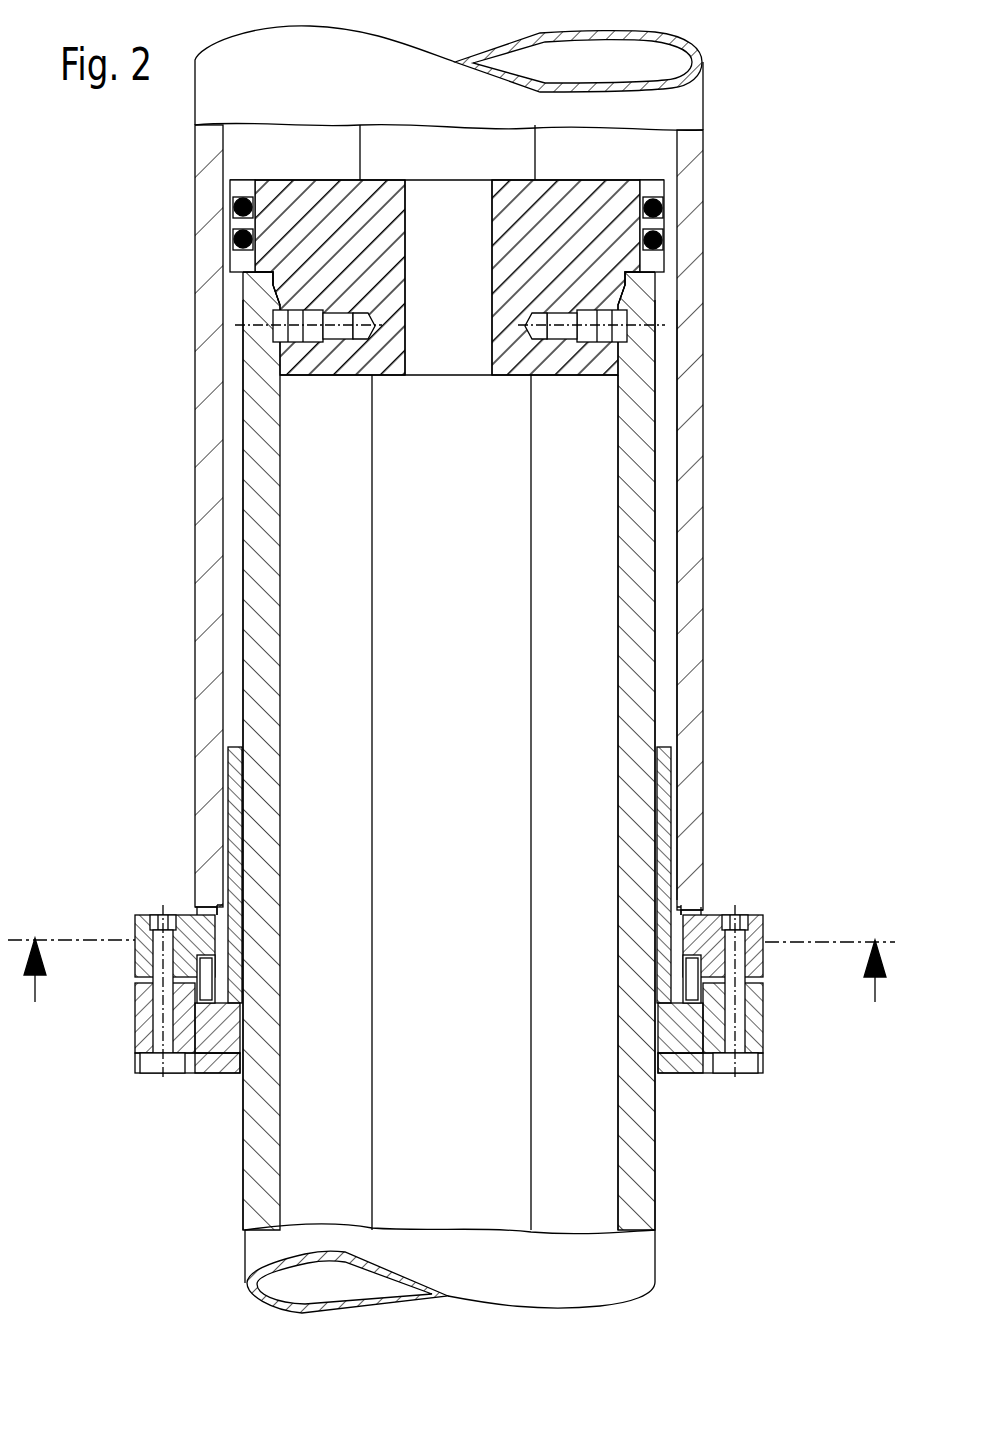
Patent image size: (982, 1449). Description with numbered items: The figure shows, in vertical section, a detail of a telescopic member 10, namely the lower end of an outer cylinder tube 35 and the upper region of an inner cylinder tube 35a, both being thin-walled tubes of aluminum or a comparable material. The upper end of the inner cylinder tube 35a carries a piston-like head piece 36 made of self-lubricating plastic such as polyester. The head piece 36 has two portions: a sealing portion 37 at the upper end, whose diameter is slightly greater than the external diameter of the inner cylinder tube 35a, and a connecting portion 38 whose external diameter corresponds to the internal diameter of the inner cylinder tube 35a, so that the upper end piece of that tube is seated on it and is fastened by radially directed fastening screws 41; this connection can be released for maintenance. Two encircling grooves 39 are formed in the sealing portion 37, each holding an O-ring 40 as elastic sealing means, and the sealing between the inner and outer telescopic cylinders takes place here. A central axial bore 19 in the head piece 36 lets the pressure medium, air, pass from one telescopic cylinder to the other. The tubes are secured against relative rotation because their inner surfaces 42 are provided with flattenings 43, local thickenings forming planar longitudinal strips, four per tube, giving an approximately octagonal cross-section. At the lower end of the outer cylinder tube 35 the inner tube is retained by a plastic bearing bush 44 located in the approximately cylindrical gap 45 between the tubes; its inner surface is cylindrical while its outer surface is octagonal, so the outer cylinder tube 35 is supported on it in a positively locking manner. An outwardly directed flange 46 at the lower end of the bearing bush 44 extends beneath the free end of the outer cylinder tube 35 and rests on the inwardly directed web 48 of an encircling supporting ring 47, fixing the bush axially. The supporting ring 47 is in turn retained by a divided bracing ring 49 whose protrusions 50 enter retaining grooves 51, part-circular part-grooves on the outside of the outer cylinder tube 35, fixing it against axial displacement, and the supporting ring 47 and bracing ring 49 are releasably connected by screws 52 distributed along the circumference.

The telescopic member 10 is at (451, 656).
The axial bore 19 is at (435, 290).
The outer cylinder tube 35 is at (210, 432).
The inner cylinder tube 35a is at (246, 405).
The head piece 36 is at (321, 177).
The sealing portion 37 is at (672, 240).
The connecting portion 38 is at (280, 352).
The encircling grooves 39 is at (664, 206).
The O-ring 40 is at (234, 239).
The fastening screws 41 is at (278, 322).
The inner surfaces 42 is at (665, 627).
The flattenings 43 is at (483, 158).
The bearing bush 44 is at (232, 788).
The cylindrical gap 45 is at (232, 487).
The flange 46 is at (222, 1058).
The supporting ring 47 is at (768, 1028).
The web 48 is at (687, 1067).
The bracing ring 49 is at (776, 916).
The protrusions 50 is at (183, 917).
The retaining grooves 51 is at (207, 903).
The screws 52 is at (145, 1028).